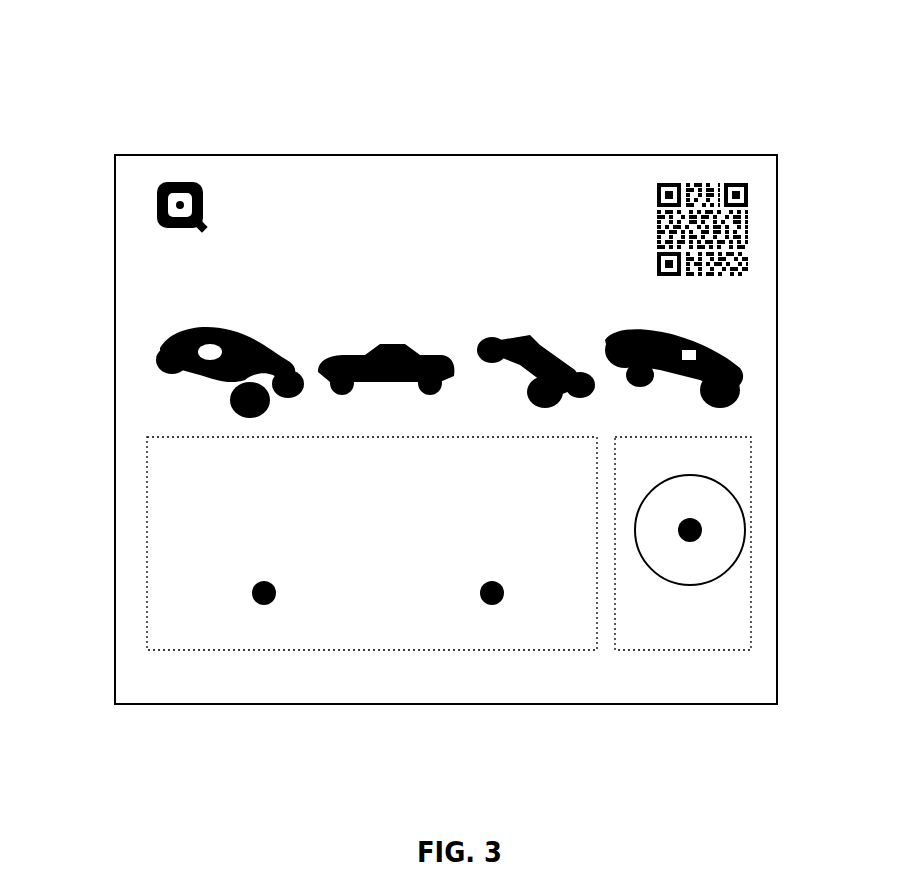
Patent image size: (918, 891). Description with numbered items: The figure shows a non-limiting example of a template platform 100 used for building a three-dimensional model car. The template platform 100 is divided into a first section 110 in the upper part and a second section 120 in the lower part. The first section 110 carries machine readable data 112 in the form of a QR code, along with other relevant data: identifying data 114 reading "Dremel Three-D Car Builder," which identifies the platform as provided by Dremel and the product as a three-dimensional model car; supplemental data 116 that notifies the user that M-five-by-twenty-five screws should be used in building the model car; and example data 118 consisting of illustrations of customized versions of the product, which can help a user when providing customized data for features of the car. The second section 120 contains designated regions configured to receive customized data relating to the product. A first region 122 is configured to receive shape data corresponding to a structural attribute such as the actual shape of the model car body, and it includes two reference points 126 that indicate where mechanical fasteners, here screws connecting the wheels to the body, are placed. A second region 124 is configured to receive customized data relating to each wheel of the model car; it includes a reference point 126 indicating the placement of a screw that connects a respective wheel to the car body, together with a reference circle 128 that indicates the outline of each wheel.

The template platform 100 is at (652, 113).
The first section 110 is at (93, 155).
The machine readable data 112 is at (740, 220).
The identifying data 114 is at (455, 197).
The supplemental data 116 is at (540, 277).
The example data 118 is at (777, 293).
The second section 120 is at (100, 442).
The first region 122 is at (382, 655).
The second region 124 is at (688, 655).
The reference point 126 is at (262, 580).
The reference circle 128 is at (722, 483).